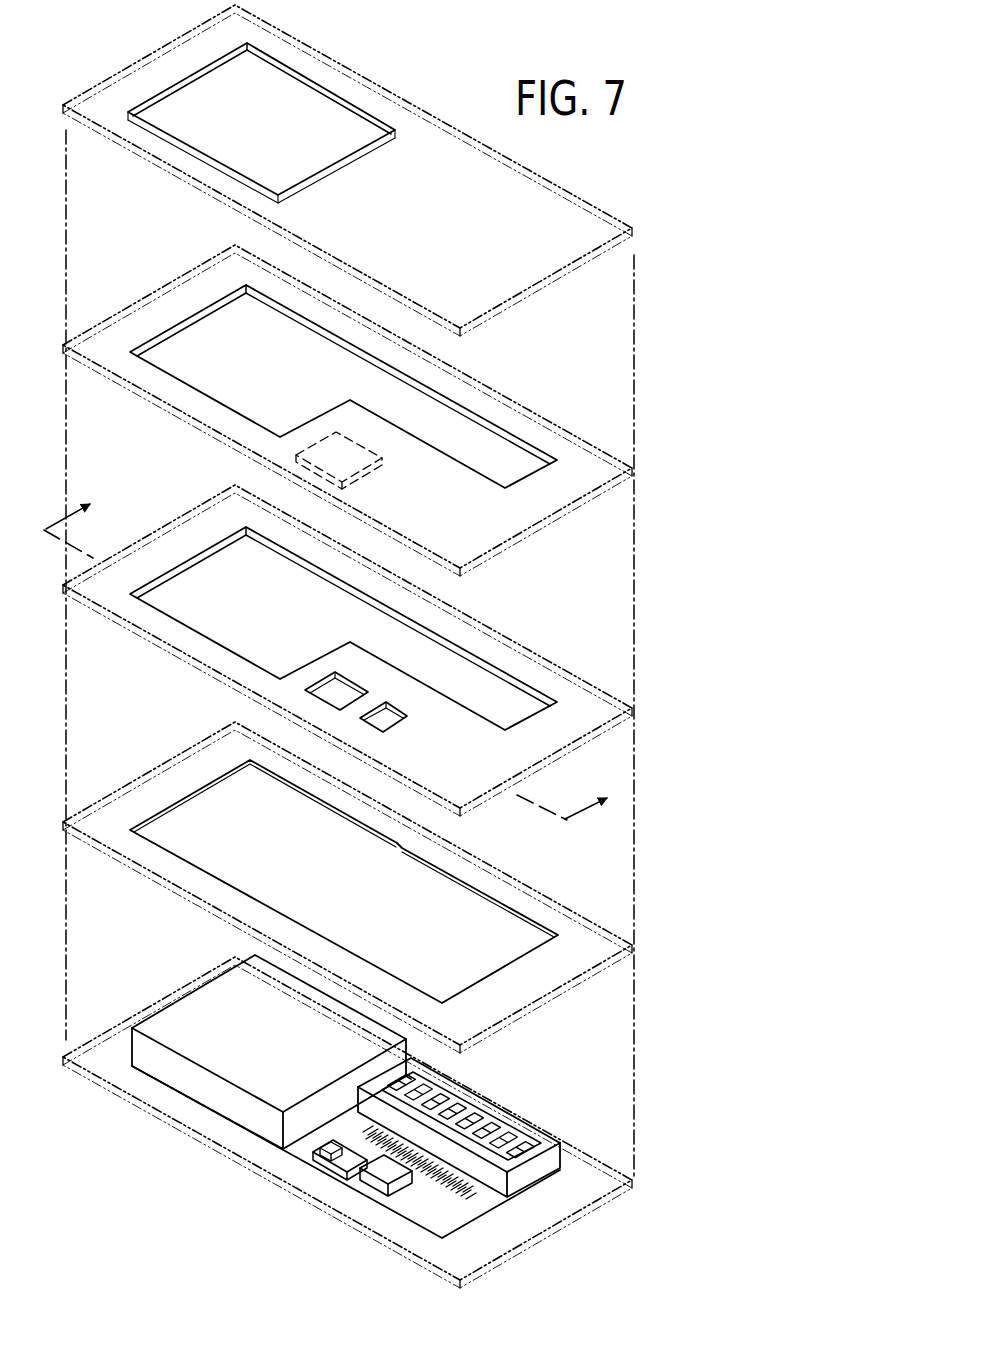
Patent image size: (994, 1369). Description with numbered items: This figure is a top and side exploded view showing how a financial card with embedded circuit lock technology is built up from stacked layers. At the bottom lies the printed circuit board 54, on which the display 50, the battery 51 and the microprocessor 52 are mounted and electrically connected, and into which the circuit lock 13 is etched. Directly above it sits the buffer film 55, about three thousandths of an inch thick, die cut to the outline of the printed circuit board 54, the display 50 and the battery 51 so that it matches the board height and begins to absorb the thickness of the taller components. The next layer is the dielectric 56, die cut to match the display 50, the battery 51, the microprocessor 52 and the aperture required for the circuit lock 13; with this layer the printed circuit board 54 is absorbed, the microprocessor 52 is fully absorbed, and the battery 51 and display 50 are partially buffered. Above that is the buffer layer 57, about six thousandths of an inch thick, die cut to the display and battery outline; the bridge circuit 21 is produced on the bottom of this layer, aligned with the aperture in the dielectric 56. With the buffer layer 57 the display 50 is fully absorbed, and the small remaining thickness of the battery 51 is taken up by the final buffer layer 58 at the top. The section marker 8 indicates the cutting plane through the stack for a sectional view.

The final buffer layer 58 is at (630, 229).
The buffer layer 57 is at (636, 470).
The dielectric 56 is at (636, 708).
The buffer film 55 is at (637, 947).
The display 50 is at (347, 1122).
The battery 51 is at (279, 1032).
The microprocessor 52 is at (378, 1188).
The circuit lock 13 is at (337, 1176).
The printed circuit board 54 is at (473, 1190).
The bridge circuit 21 is at (352, 462).
The section line of FIG. 8 is at (335, 650).